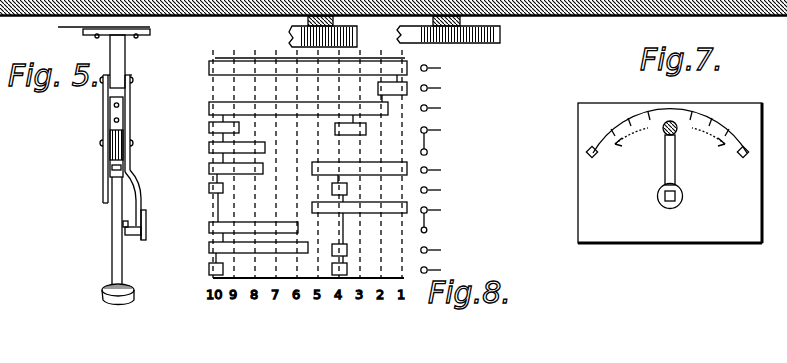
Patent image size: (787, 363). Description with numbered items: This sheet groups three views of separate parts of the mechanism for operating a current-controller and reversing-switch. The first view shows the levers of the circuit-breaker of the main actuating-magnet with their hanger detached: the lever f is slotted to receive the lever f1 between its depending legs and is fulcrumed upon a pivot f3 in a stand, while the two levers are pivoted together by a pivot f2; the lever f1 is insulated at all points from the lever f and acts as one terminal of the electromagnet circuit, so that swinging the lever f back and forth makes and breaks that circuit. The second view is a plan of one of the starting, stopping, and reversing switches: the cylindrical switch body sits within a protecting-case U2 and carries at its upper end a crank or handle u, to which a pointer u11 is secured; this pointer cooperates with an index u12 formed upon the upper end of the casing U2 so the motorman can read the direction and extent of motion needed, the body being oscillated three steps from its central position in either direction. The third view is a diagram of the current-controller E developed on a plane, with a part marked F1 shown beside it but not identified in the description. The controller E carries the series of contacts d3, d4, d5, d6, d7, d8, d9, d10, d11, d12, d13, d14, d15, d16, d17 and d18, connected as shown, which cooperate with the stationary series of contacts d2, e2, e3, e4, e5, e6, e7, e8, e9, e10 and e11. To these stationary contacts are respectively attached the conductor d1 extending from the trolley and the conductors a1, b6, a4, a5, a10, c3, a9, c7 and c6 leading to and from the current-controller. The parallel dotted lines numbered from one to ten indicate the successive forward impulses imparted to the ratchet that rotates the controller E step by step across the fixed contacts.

In FIG. 5, the lever f is at (133, 162).
In FIG. 5, the lever f1 is at (116, 219).
In FIG. 5, the pivot f2 is at (101, 143).
In FIG. 5, the pivot f3 is at (133, 80).
In FIG. 8, the current-controller E is at (500, 33).
In FIG. 8, the armature block F1 is at (357, 32).
In FIG. 8, the conductor d1 is at (447, 65).
In FIG. 8, the contact d2 is at (427, 59).
In FIG. 8, the contact d3 is at (370, 72).
In FIG. 8, the contact d4 is at (378, 88).
In FIG. 8, the contact d5 is at (306, 96).
In FIG. 8, the contact d6 is at (335, 128).
In FIG. 8, the contact d7 is at (239, 127).
In FIG. 8, the contact d8 is at (265, 147).
In FIG. 8, the contact d9 is at (358, 162).
In FIG. 8, the contact d10 is at (263, 168).
In FIG. 8, the contact d11 is at (332, 189).
In FIG. 8, the contact d12 is at (223, 188).
In FIG. 8, the contact d13 is at (362, 202).
In FIG. 8, the contact d14 is at (258, 227).
In FIG. 8, the contact d15 is at (347, 246).
In FIG. 8, the contact d16 is at (305, 243).
In FIG. 8, the contact d17 is at (347, 269).
In FIG. 8, the contact d18 is at (223, 268).
In FIG. 8, the contact e2 is at (429, 80).
In FIG. 8, the contact e3 is at (429, 100).
In FIG. 8, the contact e4 is at (429, 121).
In FIG. 8, the contact e5 is at (432, 144).
In FIG. 8, the contact e6 is at (429, 160).
In FIG. 8, the contact e7 is at (429, 182).
In FIG. 8, the contact e8 is at (429, 202).
In FIG. 8, the contact e9 is at (431, 222).
In FIG. 8, the contact e10 is at (431, 242).
In FIG. 8, the contact e11 is at (431, 262).
In FIG. 8, the conductor a1 is at (446, 87).
In FIG. 8, the conductor a4 is at (445, 131).
In FIG. 8, the conductor a5 is at (457, 151).
In FIG. 8, the conductor a9 is at (445, 209).
In FIG. 8, the conductor a10 is at (449, 169).
In FIG. 8, the conductor b6 is at (447, 108).
In FIG. 8, the conductor c3 is at (445, 189).
In FIG. 8, the conductor c6 is at (445, 269).
In FIG. 8, the conductor c7 is at (445, 249).
In FIG. 7, the crank or handle u is at (676, 163).
In FIG. 7, the pointer u11 is at (667, 122).
In FIG. 7, the index u12 is at (667, 131).
In FIG. 7, the protecting-case U2 is at (670, 173).